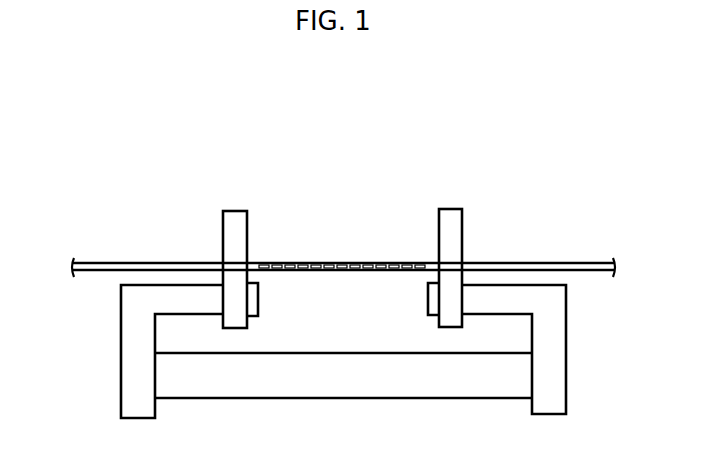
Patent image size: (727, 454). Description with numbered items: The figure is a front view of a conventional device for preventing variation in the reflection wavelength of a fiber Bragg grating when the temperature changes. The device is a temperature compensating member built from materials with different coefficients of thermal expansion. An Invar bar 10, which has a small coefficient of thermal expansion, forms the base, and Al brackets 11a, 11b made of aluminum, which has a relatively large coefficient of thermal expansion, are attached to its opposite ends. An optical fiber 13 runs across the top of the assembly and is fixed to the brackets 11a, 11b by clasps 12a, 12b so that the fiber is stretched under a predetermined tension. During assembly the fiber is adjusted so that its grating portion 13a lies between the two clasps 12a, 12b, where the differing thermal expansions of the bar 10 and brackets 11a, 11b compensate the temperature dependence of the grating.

The Invar bar 10 is at (348, 392).
The Al bracket 11a is at (129, 372).
The Al bracket 11b is at (568, 362).
The clasp 12a is at (233, 210).
The clasp 12b is at (448, 209).
The optical fiber 13 is at (543, 261).
The grating portion 13a is at (412, 252).